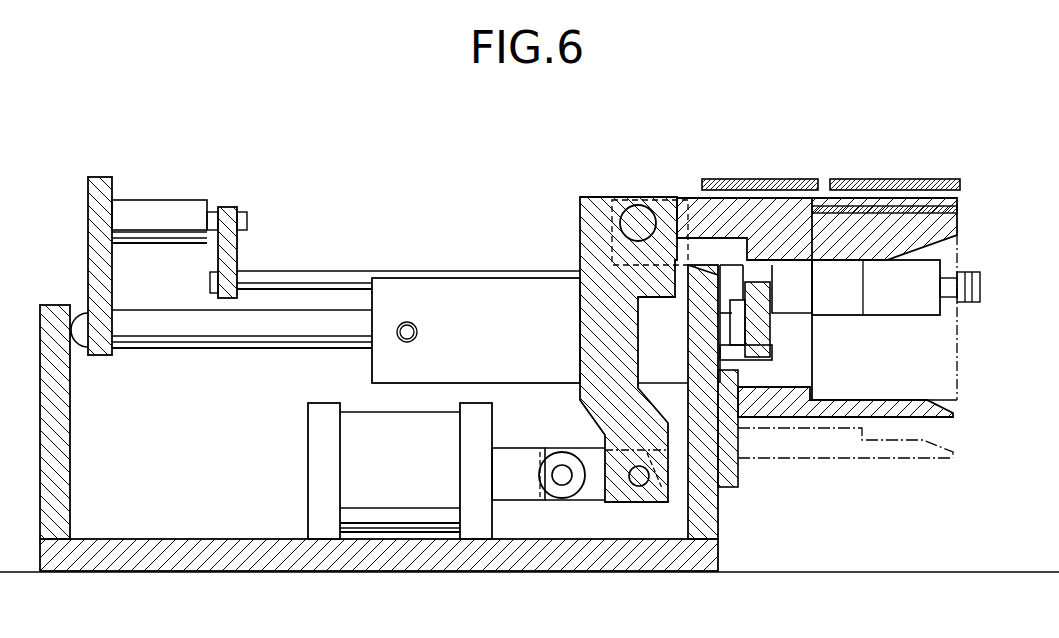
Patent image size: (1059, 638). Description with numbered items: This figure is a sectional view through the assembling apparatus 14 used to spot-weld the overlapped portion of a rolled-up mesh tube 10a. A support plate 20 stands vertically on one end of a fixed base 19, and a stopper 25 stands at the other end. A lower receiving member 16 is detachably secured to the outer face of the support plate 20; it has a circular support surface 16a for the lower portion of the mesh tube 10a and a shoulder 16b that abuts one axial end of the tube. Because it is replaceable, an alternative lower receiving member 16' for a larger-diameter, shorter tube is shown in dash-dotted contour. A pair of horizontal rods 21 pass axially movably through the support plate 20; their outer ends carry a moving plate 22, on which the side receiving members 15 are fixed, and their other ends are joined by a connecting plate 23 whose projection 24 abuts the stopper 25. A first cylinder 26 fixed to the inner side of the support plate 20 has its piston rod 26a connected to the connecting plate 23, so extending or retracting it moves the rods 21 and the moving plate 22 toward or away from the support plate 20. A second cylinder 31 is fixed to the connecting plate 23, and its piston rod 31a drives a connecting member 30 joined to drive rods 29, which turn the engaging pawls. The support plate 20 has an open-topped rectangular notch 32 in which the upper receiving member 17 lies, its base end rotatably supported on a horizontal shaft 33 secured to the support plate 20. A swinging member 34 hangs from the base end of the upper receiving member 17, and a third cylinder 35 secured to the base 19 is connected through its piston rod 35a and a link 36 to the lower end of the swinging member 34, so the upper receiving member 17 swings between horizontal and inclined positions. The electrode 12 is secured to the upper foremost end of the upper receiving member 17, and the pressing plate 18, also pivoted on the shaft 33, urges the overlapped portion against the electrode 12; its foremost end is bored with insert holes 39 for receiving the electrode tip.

The mesh tube 10a is at (957, 375).
The electrode 12 is at (957, 205).
The assembling apparatus 14 is at (483, 236).
The side receiving member 15 is at (900, 316).
The lower receiving member 16 is at (845, 456).
The lower receiving member 16' is at (845, 483).
The support surface 16a is at (891, 398).
The shoulder 16b is at (813, 398).
The upper receiving member 17 is at (942, 229).
The pressing plate 18 is at (738, 179).
The base 19 is at (162, 548).
The support plate 20 is at (719, 511).
The rod 21 is at (733, 338).
The moving plate 22 is at (769, 322).
The connecting plate 23 is at (108, 178).
The projection 24 is at (83, 349).
The stopper 25 is at (55, 312).
The first cylinder 26 is at (490, 345).
The piston rod 26a is at (246, 342).
The drive rod 29 is at (324, 272).
The connecting member 30 is at (236, 253).
The second cylinder 31 is at (174, 206).
The piston rod 31a is at (210, 246).
The notch 32 is at (702, 266).
The shaft 33 is at (630, 210).
The swinging member 34 is at (586, 346).
The third cylinder 35 is at (411, 485).
The piston rod 35a is at (518, 458).
The link 36 is at (592, 490).
The insert hole 39 is at (831, 181).